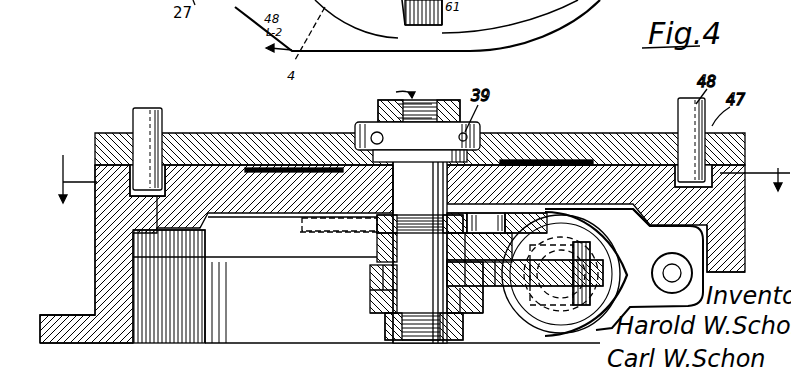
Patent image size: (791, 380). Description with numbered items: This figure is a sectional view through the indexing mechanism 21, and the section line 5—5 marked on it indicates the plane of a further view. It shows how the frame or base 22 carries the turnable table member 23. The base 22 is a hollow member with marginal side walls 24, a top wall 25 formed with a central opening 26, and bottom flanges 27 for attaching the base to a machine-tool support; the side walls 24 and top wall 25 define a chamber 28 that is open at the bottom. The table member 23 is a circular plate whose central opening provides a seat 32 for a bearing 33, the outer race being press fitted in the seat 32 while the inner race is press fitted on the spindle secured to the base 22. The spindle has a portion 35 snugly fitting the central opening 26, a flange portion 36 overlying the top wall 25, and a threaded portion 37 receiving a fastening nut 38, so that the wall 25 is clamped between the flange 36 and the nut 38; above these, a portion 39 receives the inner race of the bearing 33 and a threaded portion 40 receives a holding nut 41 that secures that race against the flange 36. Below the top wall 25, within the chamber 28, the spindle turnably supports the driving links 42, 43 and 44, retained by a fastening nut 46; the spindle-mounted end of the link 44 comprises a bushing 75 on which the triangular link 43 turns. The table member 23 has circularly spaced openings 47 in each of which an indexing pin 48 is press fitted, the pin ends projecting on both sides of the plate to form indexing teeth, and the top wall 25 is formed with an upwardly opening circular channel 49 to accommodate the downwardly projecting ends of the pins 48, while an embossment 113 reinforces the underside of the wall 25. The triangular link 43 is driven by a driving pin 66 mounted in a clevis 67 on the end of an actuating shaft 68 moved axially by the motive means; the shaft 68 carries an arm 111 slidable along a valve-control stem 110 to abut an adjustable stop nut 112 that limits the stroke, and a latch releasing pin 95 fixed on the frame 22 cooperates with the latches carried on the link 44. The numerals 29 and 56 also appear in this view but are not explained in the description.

The section line 5- 5 is at (417, 179).
The indexing mechanism 21 is at (92, 146).
The frame or base 22 is at (92, 278).
The table member 23 is at (598, 133).
The marginal side walls 24 is at (138, 280).
The top wall 25 is at (218, 215).
The central opening 26 is at (462, 192).
The bottom flanges 27 is at (53, 315).
The chamber 28 is at (212, 302).
The packing 29 is at (160, 232).
The seat 32 is at (511, 133).
The bearing 33 is at (370, 128).
The spindle portion 35 is at (400, 200).
The flange portion 36 is at (408, 162).
The threaded portion 37 is at (447, 238).
The fastening nut 38 is at (372, 232).
The spindle portion 39 is at (402, 81).
The threaded portion 40 is at (442, 100).
The holding nut 41 is at (394, 116).
The driving link 42 is at (375, 256).
The triangular link 43 is at (478, 312).
The link 44 is at (370, 307).
The fastening nut 46 is at (385, 326).
The circular openings 47 is at (168, 134).
The indexing pin 48 is at (152, 108).
The circular channel 49 is at (725, 196).
The gasket 56 is at (302, 230).
The driving pin 66 is at (541, 338).
The clevis 67 is at (528, 312).
The actuating shaft 68 is at (583, 336).
The bushing 75 is at (370, 286).
The latch releasing pin 95 is at (417, 340).
The stem 110 is at (690, 253).
The arm 111 is at (633, 262).
The stop nut 112 is at (660, 256).
The embossment 113 is at (240, 250).